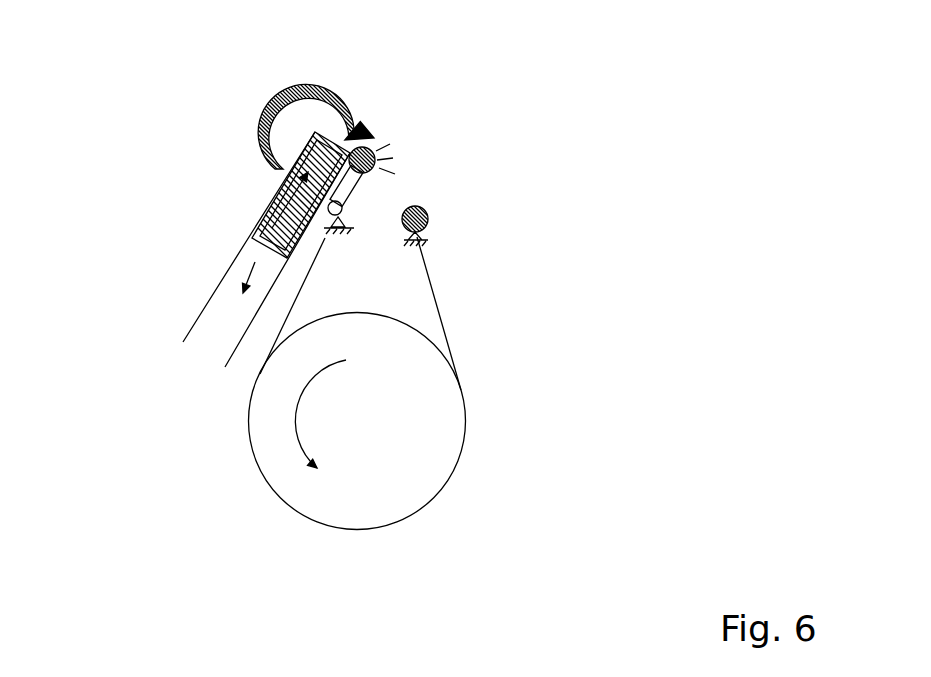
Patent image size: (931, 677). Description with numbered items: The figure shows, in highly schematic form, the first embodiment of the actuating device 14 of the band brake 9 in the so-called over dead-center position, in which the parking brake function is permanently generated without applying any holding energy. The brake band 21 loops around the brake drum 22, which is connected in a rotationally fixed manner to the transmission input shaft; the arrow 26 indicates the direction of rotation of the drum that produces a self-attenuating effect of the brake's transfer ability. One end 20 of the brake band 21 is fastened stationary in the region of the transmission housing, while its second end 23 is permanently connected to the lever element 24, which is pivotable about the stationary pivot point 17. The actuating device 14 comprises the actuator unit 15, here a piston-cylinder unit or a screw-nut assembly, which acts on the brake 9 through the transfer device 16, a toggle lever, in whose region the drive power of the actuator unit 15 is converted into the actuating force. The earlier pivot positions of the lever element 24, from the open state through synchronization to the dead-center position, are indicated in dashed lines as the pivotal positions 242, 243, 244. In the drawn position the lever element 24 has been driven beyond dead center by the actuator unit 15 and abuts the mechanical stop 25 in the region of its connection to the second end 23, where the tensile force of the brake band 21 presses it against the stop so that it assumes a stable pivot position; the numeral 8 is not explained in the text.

The first drive unit 8 is at (241, 524).
The brake 9 is at (421, 535).
The actuating device 14 is at (183, 293).
The actuator unit 15 is at (262, 216).
The transfer device 16 is at (324, 106).
The stationary pivot point 17 is at (358, 222).
The end of brake band 20 is at (432, 237).
The brake band 21 is at (447, 339).
The brake drum 22 is at (359, 531).
The second end of brake band 23 is at (356, 189).
The lever element 24 is at (348, 194).
The mechanical stop 25 is at (368, 147).
The arrow 26 is at (295, 400).
The pivotal position of lever element 242 is at (317, 222).
The pivotal position of lever element 243 is at (305, 192).
The pivotal position of lever element 244 is at (288, 132).